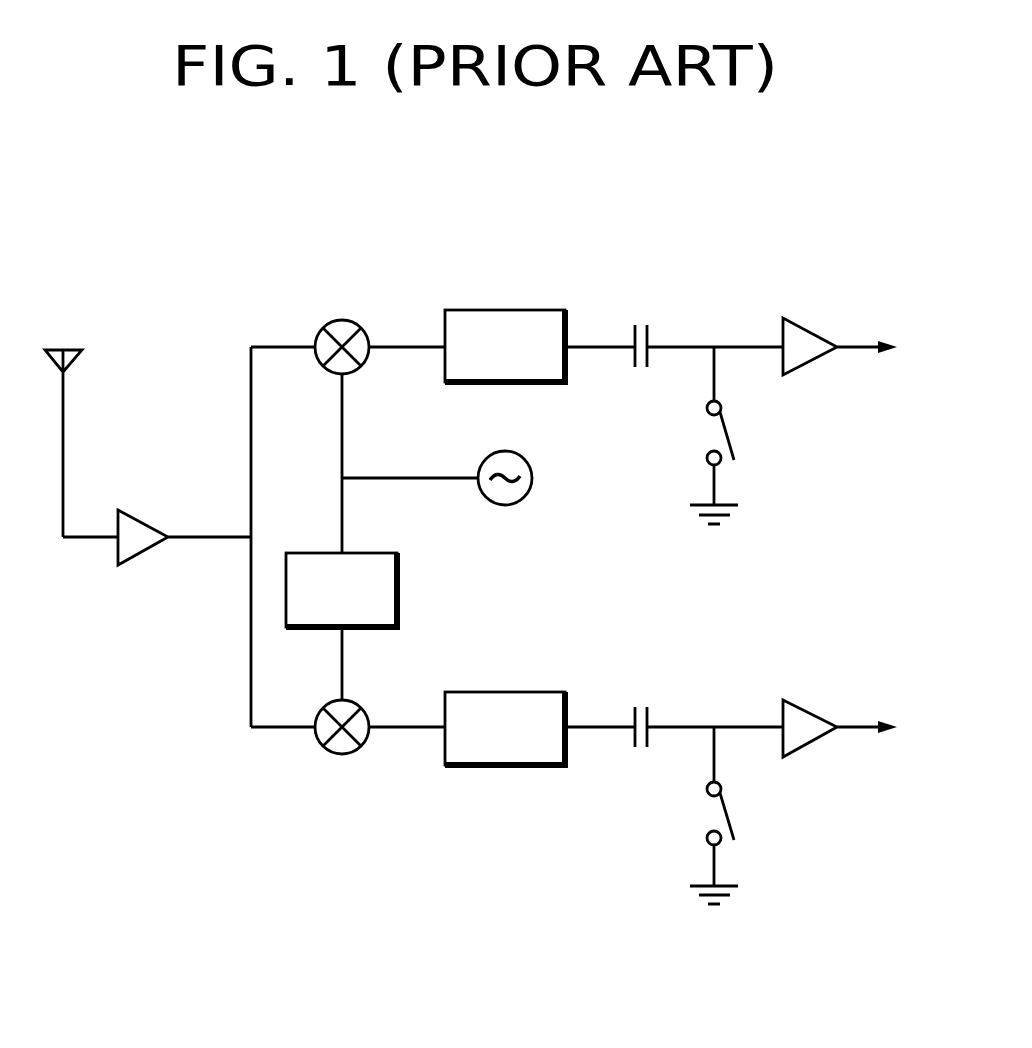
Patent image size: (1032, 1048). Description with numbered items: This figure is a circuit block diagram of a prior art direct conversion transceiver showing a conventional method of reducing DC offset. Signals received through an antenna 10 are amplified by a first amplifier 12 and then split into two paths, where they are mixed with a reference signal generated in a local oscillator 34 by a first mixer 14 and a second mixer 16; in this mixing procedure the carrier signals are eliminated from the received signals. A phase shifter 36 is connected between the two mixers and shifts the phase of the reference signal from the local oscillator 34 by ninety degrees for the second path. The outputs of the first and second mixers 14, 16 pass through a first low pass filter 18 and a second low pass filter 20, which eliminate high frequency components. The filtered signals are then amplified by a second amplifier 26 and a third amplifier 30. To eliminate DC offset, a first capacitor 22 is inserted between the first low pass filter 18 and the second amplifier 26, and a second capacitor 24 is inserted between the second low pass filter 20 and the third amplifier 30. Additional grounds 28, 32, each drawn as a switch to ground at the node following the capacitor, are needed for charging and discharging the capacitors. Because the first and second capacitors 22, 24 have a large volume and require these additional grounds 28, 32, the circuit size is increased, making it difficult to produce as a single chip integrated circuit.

The antenna 10 is at (68, 350).
The first amplifier 12 is at (148, 520).
The first mixer 14 is at (342, 320).
The second mixer 16 is at (342, 755).
The first low pass filter 18 is at (530, 308).
The second low pass filter 20 is at (530, 690).
The first capacitor 22 is at (647, 316).
The second capacitor 24 is at (647, 696).
The second amplifier 26 is at (813, 330).
The ground 28 is at (760, 486).
The third amplifier 30 is at (812, 710).
The ground 32 is at (760, 846).
The local oscillator 34 is at (503, 450).
The phase shifter 36 is at (398, 592).